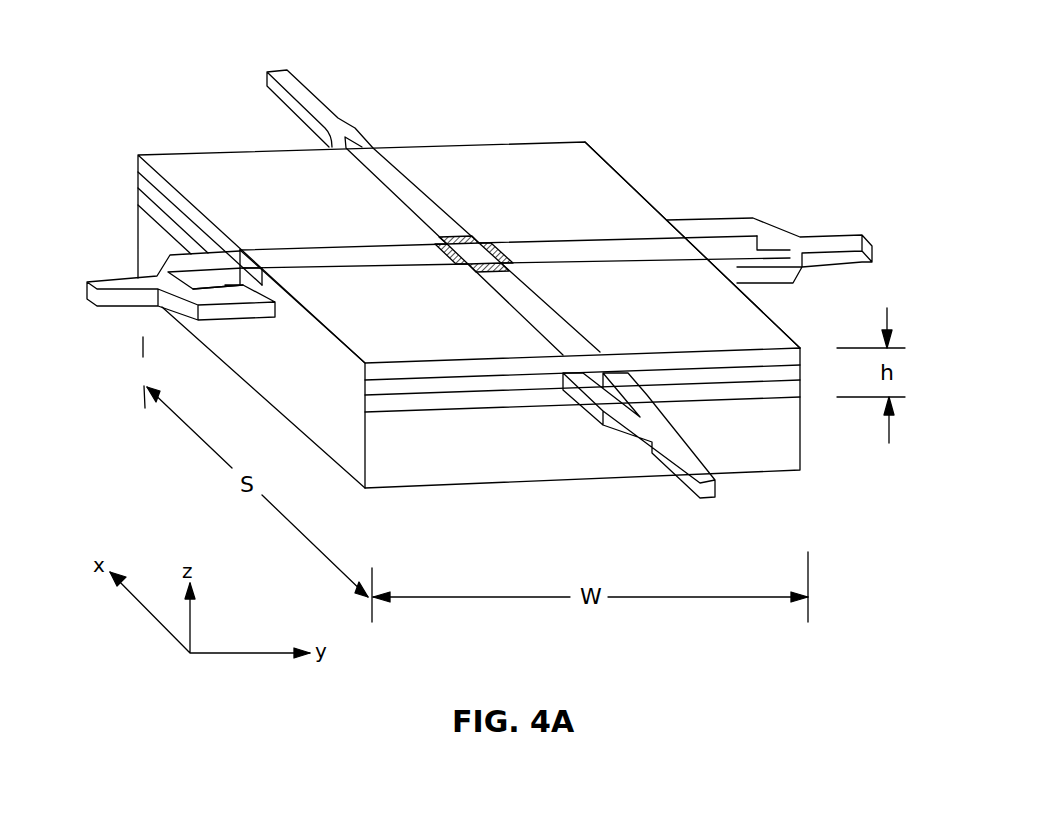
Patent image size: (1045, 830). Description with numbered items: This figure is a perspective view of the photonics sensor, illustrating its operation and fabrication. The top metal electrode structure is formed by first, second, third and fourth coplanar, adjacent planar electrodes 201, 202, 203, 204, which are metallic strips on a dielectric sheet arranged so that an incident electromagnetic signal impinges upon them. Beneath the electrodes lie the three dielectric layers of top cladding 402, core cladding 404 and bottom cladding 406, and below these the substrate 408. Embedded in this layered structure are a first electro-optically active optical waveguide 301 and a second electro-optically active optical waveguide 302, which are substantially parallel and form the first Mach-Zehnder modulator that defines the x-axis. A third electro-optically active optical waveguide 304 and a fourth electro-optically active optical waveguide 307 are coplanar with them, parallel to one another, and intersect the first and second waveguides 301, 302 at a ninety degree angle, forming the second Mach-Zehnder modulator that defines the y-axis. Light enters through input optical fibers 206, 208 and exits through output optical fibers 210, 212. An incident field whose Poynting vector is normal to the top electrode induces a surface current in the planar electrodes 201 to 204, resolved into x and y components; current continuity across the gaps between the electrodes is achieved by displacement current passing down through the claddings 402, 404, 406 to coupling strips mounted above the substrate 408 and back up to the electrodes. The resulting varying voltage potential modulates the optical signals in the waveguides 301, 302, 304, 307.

The first planar electrode 201 is at (591, 162).
The second planar electrode 202 is at (765, 330).
The third planar electrode 203 is at (378, 327).
The fourth planar electrode 204 is at (190, 158).
The input optical fiber 206 is at (310, 88).
The input optical fiber 208 is at (823, 238).
The output optical fiber 210 is at (693, 487).
The output optical fiber 212 is at (112, 303).
The first electro-optically active optical waveguide 301 is at (628, 368).
The second electro-optically active optical waveguide 302 is at (530, 355).
The third electro-optically active optical waveguide 304 is at (222, 296).
The fourth electro-optically active optical waveguide 307 is at (167, 257).
The top cladding 402 is at (137, 165).
The core cladding 404 is at (139, 182).
The bottom cladding 406 is at (138, 202).
The substrate 408 is at (497, 472).